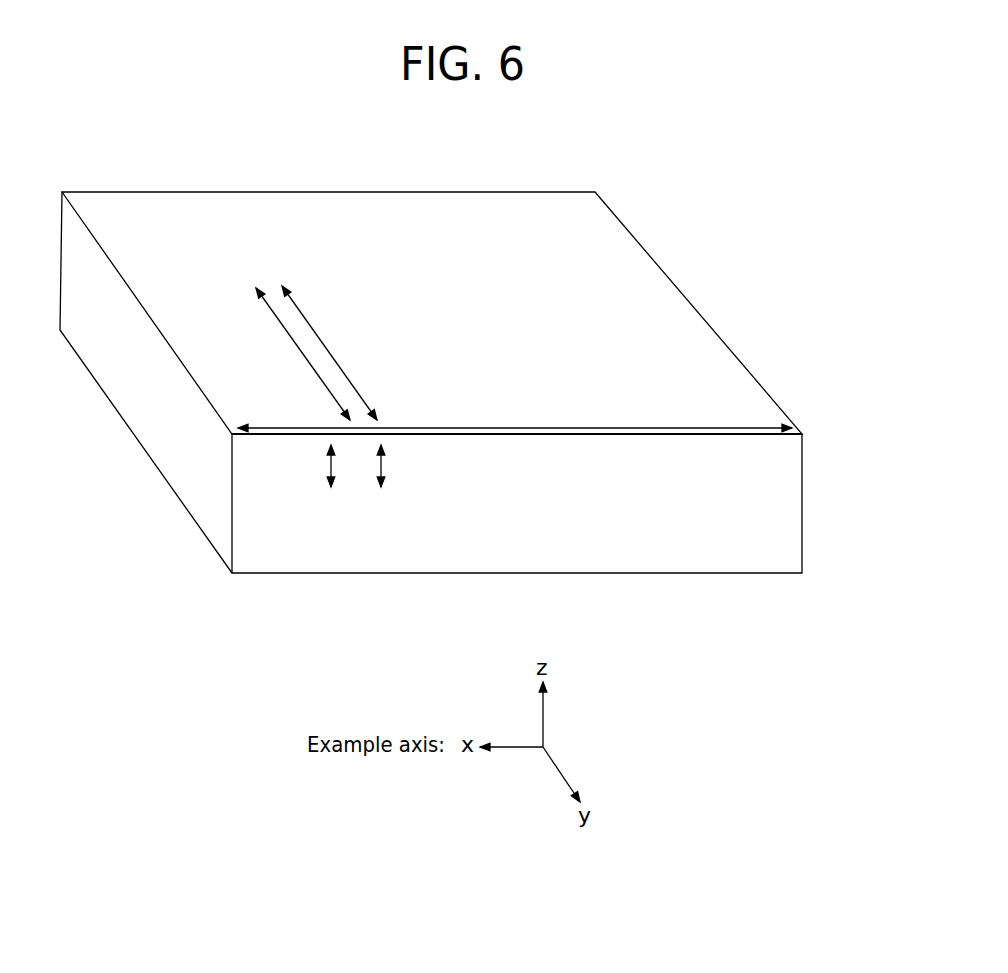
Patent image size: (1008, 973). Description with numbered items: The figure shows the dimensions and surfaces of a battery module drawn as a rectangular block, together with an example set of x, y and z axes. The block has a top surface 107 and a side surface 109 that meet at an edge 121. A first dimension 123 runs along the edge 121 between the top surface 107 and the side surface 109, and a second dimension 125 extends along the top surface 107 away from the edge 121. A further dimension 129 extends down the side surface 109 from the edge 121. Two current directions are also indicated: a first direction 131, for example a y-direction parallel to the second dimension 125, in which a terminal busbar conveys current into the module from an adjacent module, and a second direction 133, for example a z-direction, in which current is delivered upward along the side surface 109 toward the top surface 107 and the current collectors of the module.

The top surface 107 is at (585, 249).
The side surface 109 is at (737, 552).
The edge 121 is at (738, 437).
The first dimension 123 is at (522, 427).
The second dimension 125 is at (300, 348).
The first direction 131 is at (321, 338).
The dimension 129 is at (328, 467).
The second direction 133 is at (383, 463).